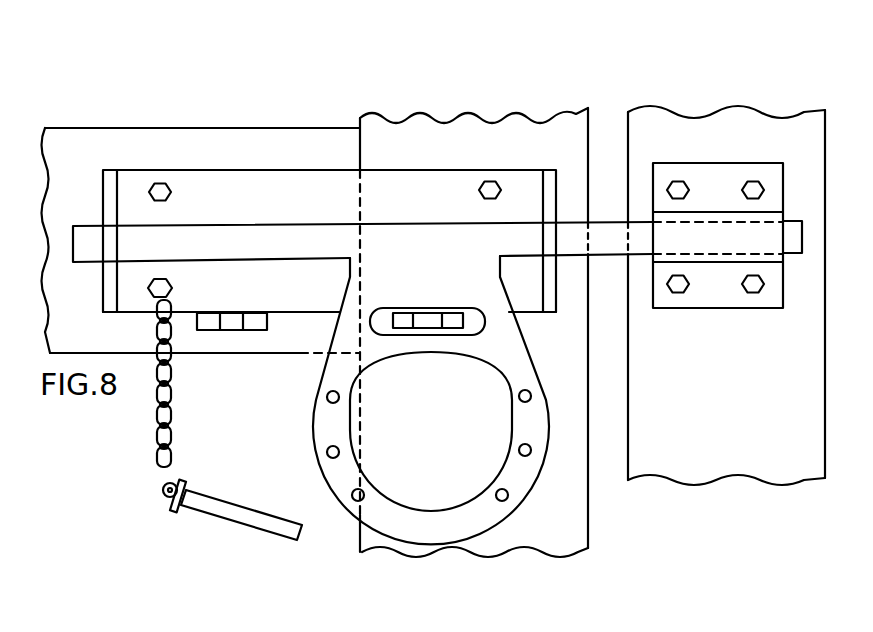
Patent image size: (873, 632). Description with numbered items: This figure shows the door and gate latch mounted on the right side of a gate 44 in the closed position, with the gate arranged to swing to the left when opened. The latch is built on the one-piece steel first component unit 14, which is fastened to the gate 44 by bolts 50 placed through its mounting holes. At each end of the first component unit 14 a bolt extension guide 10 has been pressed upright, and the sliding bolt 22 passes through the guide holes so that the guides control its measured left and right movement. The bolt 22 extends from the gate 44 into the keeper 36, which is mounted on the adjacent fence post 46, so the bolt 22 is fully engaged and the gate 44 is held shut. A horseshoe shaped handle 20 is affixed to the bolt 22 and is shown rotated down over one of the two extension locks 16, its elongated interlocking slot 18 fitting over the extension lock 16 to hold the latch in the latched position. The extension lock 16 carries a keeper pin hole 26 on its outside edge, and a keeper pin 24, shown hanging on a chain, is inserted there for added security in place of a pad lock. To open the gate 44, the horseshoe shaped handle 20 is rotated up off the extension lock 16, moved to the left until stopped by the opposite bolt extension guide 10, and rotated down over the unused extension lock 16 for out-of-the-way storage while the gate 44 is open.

The bolt extension guide 10 is at (113, 170).
The first component unit 14 is at (211, 170).
The extension lock 16 is at (455, 318).
The elongated interlocking slot 18 is at (379, 308).
The horseshoe shaped handle 20 is at (490, 524).
The bolt 22 is at (86, 226).
The keeper pin 24 is at (166, 504).
The keeper pin hole 26 is at (430, 316).
The keeper 36 is at (717, 163).
The gate 44 is at (360, 118).
The fence post 46 is at (789, 110).
The bolt 50 is at (677, 184).